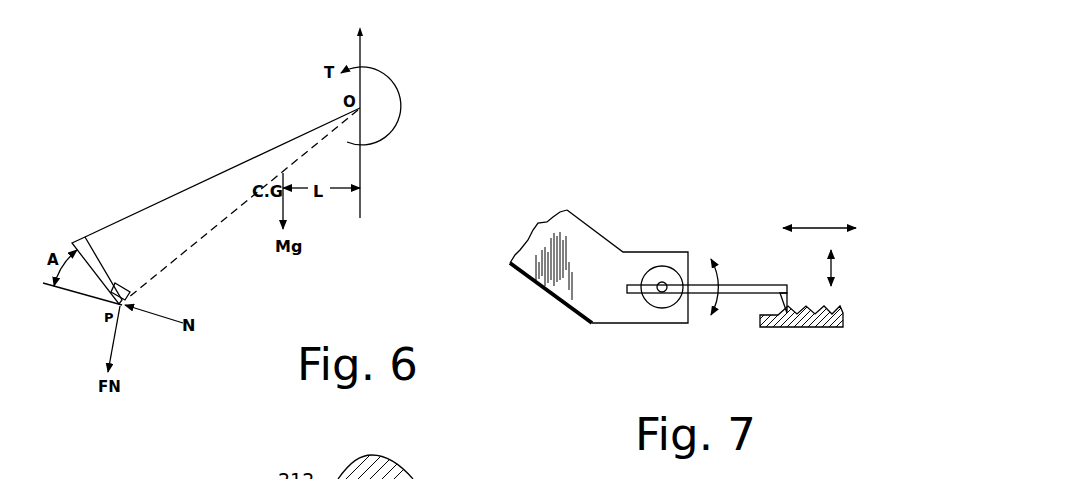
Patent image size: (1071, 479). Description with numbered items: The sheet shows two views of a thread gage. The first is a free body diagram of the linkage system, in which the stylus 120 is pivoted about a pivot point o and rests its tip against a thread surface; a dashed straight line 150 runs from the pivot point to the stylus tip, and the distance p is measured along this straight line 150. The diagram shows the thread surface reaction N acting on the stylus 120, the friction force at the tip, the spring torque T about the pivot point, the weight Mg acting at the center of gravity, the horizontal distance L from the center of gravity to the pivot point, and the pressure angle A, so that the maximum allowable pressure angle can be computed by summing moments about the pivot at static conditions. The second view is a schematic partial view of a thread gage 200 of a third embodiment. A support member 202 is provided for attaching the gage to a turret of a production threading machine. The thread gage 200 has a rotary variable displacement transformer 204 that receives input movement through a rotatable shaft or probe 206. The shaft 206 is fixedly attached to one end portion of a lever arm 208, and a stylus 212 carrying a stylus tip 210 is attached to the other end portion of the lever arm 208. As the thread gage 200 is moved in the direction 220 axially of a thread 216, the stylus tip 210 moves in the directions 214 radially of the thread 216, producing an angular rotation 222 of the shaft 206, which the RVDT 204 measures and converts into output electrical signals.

In FIG. 6, the stylus 120 is at (90, 249).
In FIG. 6, the straight line 150 is at (222, 222).
In FIG. 7, the thread gage 200 is at (694, 265).
In FIG. 7, the support member 202 is at (588, 233).
In FIG. 7, the rotary variable displacement transformer (RVDT) 204 is at (663, 267).
In FIG. 7, the rotatable shaft or probe 206 is at (664, 292).
In FIG. 7, the lever arm 208 is at (747, 285).
In FIG. 7, the stylus tip 210 is at (783, 305).
In FIG. 7, the stylus 212 is at (788, 298).
In FIG. 7, the radial movement directions 214 is at (833, 268).
In FIG. 7, the thread 216 is at (829, 327).
In FIG. 7, the axial movement direction 220 is at (822, 226).
In FIG. 7, the angular rotation 222 is at (720, 268).